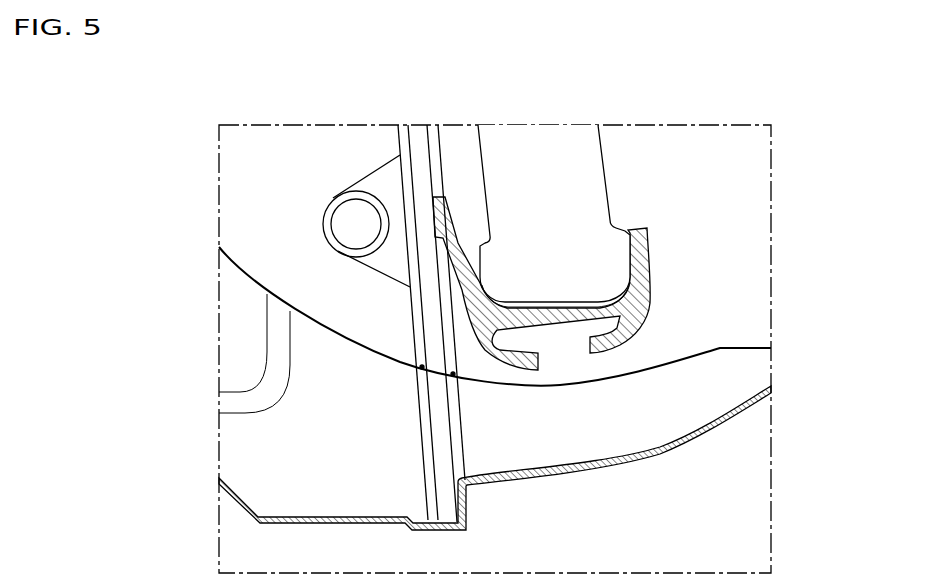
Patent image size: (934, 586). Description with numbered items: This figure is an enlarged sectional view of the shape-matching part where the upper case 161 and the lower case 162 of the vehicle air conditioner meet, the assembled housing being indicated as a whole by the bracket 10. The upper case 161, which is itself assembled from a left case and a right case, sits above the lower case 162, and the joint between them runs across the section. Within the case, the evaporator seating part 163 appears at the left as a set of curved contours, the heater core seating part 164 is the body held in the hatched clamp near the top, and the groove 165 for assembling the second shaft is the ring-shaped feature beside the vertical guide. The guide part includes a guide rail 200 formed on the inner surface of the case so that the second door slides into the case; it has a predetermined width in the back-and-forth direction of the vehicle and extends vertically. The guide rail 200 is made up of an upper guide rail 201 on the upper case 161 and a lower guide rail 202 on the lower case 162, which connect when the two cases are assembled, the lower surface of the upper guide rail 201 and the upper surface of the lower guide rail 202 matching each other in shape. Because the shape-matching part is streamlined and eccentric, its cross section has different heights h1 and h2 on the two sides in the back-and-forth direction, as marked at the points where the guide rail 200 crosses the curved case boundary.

The housing 10 is at (560, 388).
The upper case 161 is at (740, 315).
The lower case 162 is at (735, 420).
The evaporator seating part 163 is at (240, 332).
The heater core seating part 164 is at (582, 192).
The groove for assembling the shaft 165 is at (353, 220).
The guide rail 200 is at (263, 331).
The upper guide rail 201 is at (424, 328).
The lower guide rail 202 is at (428, 460).
The height h1 is at (422, 367).
The height h2 is at (453, 374).